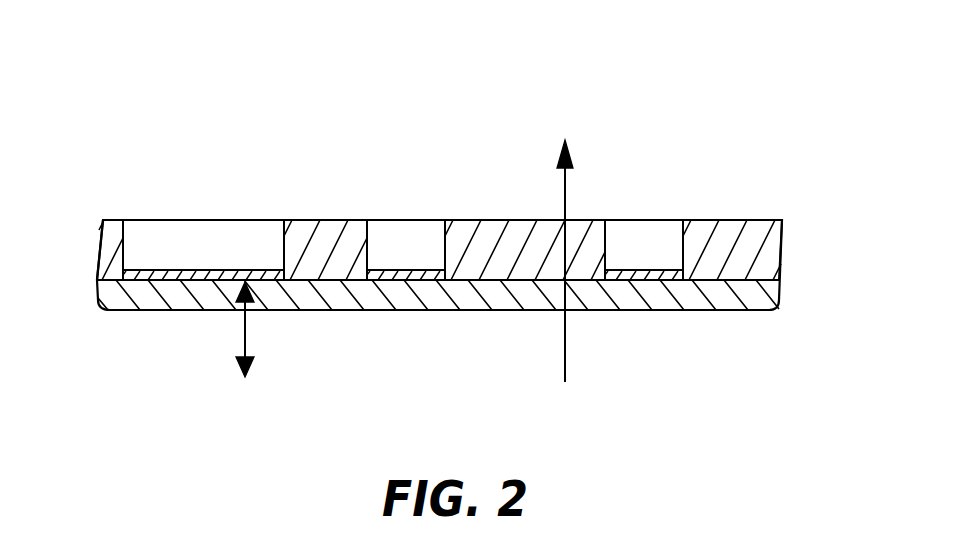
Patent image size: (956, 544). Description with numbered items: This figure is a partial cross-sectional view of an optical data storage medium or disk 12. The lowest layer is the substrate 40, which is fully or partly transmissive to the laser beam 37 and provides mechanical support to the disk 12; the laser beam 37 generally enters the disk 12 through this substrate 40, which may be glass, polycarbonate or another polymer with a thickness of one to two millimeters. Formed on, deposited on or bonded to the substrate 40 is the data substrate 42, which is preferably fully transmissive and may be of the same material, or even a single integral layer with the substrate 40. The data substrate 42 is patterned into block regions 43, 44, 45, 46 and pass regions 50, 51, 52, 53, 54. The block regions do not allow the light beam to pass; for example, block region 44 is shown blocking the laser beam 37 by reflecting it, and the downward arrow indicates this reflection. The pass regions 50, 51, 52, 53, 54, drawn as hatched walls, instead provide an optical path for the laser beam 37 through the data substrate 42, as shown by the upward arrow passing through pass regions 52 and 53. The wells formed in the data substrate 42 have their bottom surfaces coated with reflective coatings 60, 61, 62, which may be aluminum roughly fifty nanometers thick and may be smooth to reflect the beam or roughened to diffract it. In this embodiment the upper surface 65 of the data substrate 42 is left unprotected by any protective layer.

The optical data storage medium or disk 12 is at (494, 103).
The laser beam 37 is at (245, 340).
The substrate 40 is at (750, 306).
The data substrate 42 is at (783, 235).
The block region 43 is at (167, 230).
The block region 44 is at (210, 222).
The block region 45 is at (408, 222).
The block region 46 is at (653, 224).
The pass region 50 is at (118, 220).
The pass region 51 is at (303, 220).
The pass region 52 is at (495, 220).
The pass region 53 is at (588, 220).
The pass region 54 is at (755, 220).
The reflective coating 60 is at (143, 274).
The reflective coating 61 is at (402, 274).
The reflective coating 62 is at (643, 274).
The upper surface 65 is at (702, 220).